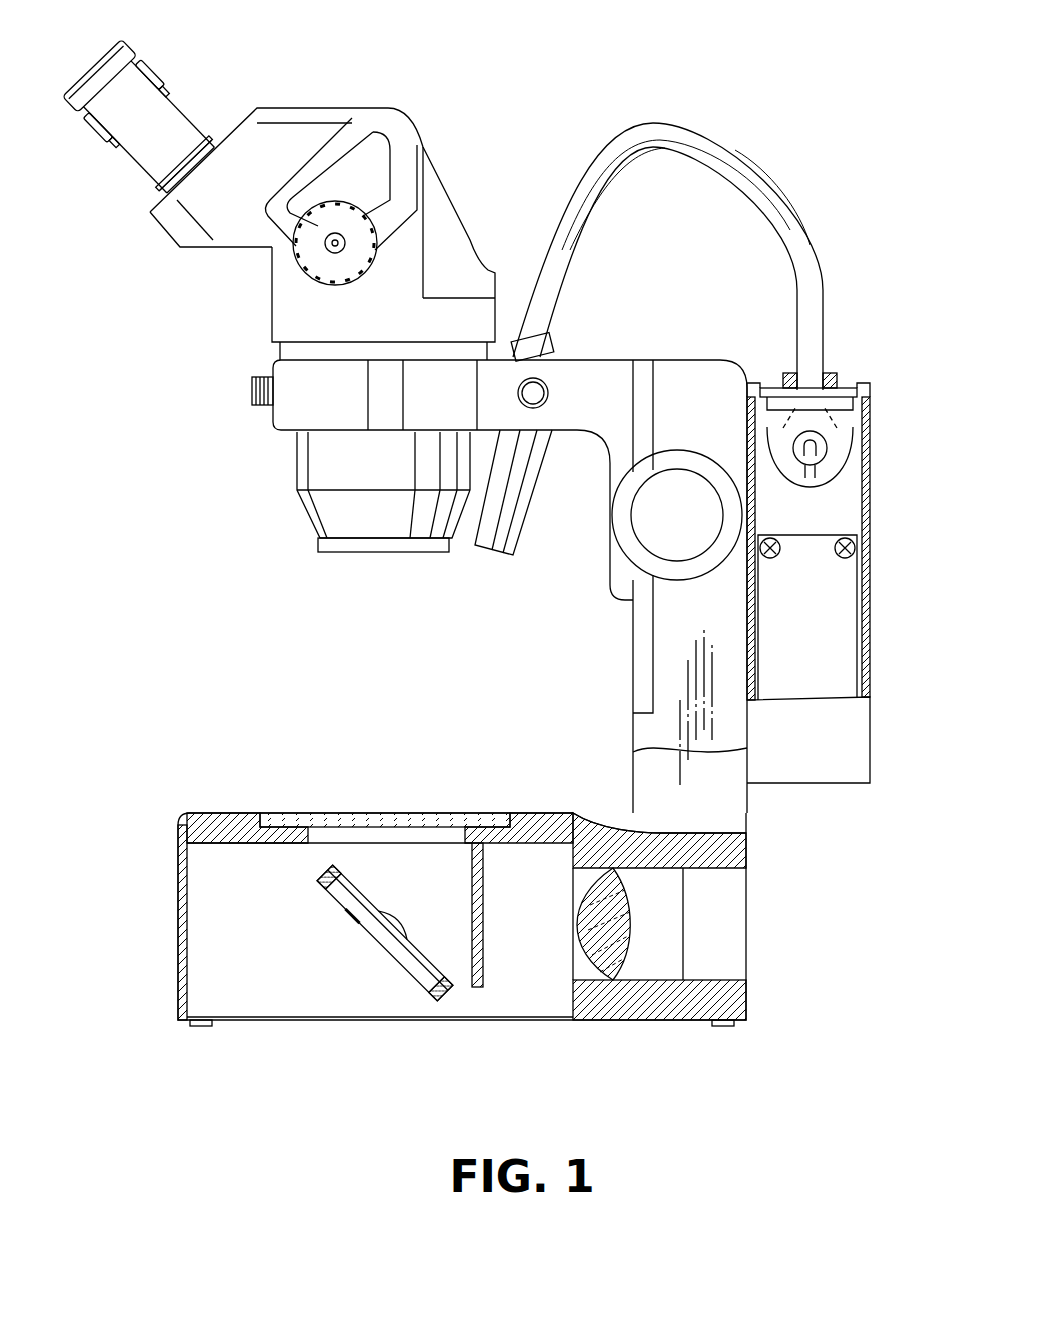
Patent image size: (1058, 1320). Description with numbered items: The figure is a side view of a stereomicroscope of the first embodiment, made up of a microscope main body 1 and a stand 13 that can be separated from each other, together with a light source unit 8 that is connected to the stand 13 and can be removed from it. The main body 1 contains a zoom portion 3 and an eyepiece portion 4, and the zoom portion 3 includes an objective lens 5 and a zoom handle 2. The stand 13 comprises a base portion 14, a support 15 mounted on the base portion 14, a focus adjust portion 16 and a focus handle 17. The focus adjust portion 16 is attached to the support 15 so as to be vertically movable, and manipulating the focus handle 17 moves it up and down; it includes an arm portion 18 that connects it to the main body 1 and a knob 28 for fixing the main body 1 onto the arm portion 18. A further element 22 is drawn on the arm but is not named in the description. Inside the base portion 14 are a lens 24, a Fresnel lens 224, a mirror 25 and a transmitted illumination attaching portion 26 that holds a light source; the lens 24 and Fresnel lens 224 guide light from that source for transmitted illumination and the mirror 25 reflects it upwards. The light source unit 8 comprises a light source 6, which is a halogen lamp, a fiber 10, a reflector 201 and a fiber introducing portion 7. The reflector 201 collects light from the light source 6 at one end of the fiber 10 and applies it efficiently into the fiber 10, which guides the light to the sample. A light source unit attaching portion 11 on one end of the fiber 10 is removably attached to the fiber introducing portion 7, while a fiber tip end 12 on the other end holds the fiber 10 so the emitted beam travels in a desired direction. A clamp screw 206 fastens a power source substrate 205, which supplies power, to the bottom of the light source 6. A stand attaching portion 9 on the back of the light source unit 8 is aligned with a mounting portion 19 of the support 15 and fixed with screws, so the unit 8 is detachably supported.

The microscope main body 1 is at (395, 125).
The zoom handle 2 is at (306, 252).
The zoom portion 3 is at (282, 312).
The eyepiece portion 4 is at (195, 122).
The objective lens 5 is at (300, 470).
The light source 6 is at (830, 450).
The fiber introducing portion 7 is at (845, 408).
The light source unit 8 is at (855, 750).
The stand attaching portion 9 is at (758, 690).
The fiber 10 is at (718, 143).
The light source unit attaching portion 11 is at (866, 385).
The fiber tip end 12 is at (492, 548).
The stand 13 is at (790, 834).
The base portion 14 is at (237, 813).
The support 15 is at (698, 378).
The focus adjust portion 16 is at (640, 678).
The focus handle 17 is at (648, 528).
The arm portion 18 is at (283, 418).
The mounting portion 19 is at (633, 752).
The fixing screw 22 is at (542, 388).
The lens 24 is at (606, 965).
The mirror 25 is at (418, 985).
The transmitted illumination attaching portion 26 is at (727, 983).
The knob 28 is at (250, 391).
The reflector 201 is at (840, 483).
The power source substrate 205 is at (845, 652).
The clamp screw 206 is at (850, 560).
The Fresnel lens 224 is at (477, 990).